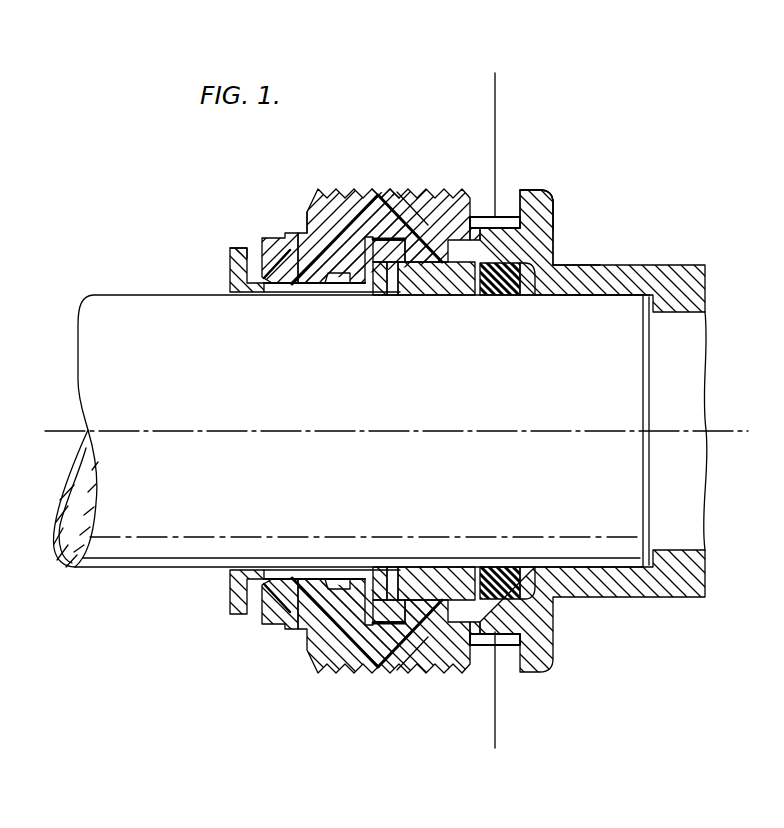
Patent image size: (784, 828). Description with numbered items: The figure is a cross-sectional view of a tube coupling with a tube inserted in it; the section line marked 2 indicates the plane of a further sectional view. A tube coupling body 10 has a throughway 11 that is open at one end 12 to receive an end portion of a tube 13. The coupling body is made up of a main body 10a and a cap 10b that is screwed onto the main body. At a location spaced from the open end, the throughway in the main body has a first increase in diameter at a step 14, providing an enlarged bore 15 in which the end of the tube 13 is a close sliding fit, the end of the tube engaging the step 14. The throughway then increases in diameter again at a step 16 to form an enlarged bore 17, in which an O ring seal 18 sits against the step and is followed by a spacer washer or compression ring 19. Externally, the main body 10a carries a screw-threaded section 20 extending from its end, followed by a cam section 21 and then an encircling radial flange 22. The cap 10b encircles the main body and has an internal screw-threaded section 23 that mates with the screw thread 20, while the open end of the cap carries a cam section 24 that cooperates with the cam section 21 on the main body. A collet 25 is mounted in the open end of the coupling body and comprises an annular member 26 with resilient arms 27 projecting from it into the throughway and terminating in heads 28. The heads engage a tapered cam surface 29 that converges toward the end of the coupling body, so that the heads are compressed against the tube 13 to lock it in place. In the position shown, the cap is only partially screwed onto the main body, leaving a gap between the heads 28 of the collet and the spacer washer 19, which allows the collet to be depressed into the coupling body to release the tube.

The tube coupling body 10 is at (306, 168).
The main body 10a is at (554, 215).
The cap 10b is at (306, 212).
The throughway 11 is at (685, 366).
The open end 12 is at (262, 613).
The tube 13 is at (110, 560).
The step 14 is at (687, 262).
The enlarged bore 15 is at (627, 263).
The step 16 is at (568, 263).
The enlarged bore 17 is at (478, 298).
The O ring seal 18 is at (514, 297).
The spacer washer or compression ring 19 is at (437, 297).
The external screw-threaded section 20 is at (413, 238).
The cam section 21 is at (512, 217).
The encircling radial flange 22 is at (527, 193).
The internal screw-threaded section 23 is at (380, 198).
The cam section 24 is at (473, 230).
The collet 25 is at (230, 262).
The annular member 26 is at (244, 297).
The resilient arms 27 is at (297, 297).
The heads 28 is at (380, 297).
The tapered cam surface 29 is at (278, 238).
The section line 2- 2 is at (518, 741).